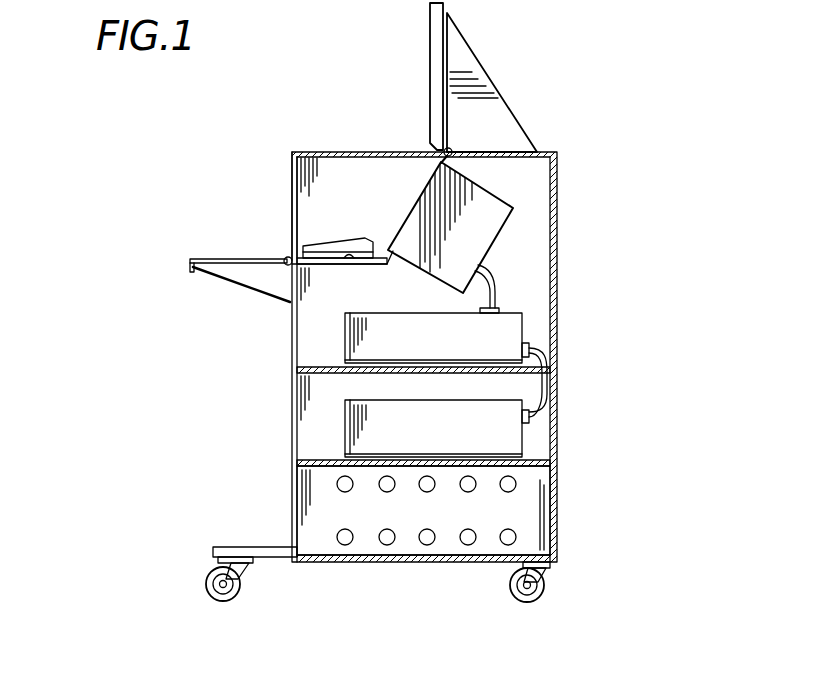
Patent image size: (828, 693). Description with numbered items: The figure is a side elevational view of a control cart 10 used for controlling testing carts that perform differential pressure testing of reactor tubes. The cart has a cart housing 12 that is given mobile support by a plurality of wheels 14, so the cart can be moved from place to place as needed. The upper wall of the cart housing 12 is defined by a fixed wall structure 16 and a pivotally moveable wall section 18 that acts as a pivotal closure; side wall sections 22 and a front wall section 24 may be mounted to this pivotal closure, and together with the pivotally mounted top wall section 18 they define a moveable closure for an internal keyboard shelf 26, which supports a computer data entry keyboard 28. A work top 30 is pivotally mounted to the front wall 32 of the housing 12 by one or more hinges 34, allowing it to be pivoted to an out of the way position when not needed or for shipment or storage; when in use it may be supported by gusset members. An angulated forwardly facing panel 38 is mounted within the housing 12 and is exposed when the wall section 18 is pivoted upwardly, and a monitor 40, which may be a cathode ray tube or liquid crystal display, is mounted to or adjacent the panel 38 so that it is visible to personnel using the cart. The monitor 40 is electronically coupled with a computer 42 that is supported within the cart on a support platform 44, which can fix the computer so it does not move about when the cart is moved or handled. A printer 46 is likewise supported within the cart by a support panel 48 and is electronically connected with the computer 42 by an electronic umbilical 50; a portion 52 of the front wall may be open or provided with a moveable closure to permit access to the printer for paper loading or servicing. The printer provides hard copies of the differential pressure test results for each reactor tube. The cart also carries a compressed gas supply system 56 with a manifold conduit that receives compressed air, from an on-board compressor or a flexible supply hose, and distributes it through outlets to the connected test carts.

The control cart 10 is at (540, 65).
The cart housing 12 is at (557, 313).
The wheels 14 is at (225, 601).
The fixed wall structure 16 is at (553, 148).
The pivotally moveable wall section 18 is at (431, 32).
The side wall sections 22 is at (312, 202).
The front wall section 24 is at (292, 172).
The keyboard shelf 26 is at (360, 260).
The computer data entry keyboard 28 is at (295, 263).
The work top 30 is at (186, 261).
The front wall 32 is at (292, 358).
The hinges 34 is at (232, 282).
The angulated forwardly facing panel 38 is at (430, 172).
The monitor 40 is at (433, 207).
The computer 42 is at (500, 322).
The support platform 44 is at (322, 375).
The printer 46 is at (523, 433).
The support panel 48 is at (323, 480).
The electronic umbilical 50 is at (547, 388).
The front wall portion 52 is at (318, 462).
The compressed gas supply system 56 is at (540, 513).